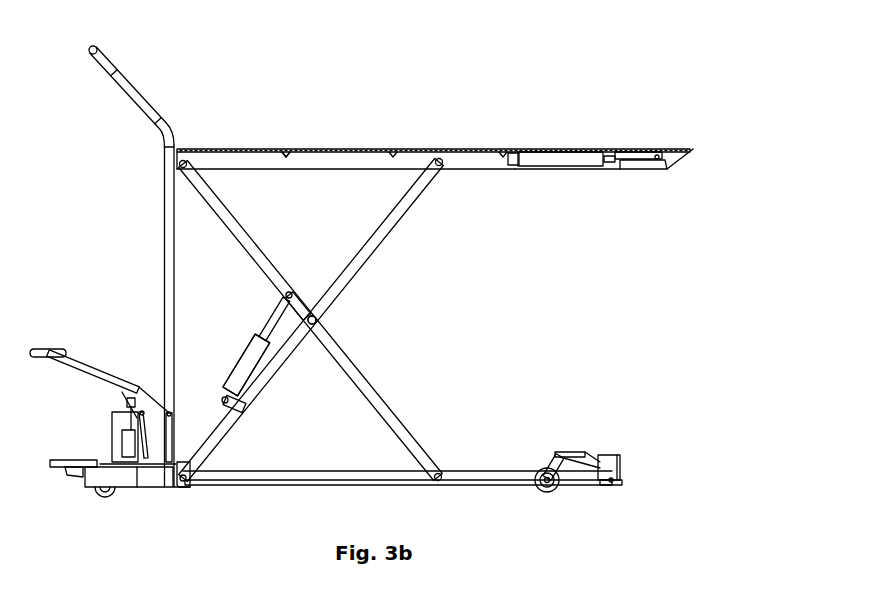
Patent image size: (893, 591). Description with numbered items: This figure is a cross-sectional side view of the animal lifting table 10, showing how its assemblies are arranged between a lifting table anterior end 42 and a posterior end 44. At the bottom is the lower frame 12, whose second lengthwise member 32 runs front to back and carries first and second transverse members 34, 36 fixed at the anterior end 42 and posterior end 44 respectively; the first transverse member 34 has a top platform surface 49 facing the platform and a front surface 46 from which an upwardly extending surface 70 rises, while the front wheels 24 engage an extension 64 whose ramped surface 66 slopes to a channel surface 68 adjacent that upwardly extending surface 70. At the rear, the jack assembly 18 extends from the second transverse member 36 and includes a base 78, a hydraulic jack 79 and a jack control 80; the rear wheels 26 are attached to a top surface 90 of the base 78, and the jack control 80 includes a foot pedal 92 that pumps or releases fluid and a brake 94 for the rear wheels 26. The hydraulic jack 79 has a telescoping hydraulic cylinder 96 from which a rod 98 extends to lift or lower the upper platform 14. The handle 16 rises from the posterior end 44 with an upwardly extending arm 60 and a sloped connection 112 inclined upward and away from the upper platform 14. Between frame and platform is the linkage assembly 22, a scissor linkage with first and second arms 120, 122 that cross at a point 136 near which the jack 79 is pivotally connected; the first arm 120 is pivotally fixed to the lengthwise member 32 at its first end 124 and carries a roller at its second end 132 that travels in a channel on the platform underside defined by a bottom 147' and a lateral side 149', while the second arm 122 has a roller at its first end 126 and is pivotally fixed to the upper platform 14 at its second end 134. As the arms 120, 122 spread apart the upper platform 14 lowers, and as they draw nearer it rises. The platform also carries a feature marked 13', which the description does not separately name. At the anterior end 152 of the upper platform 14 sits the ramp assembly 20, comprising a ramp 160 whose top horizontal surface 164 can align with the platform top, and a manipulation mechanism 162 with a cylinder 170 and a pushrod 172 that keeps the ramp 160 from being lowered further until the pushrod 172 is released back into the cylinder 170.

The animal lifting table 10 is at (730, 297).
The lower frame 12 is at (518, 464).
The platform deck surface 13' is at (435, 132).
The upper platform 14 is at (545, 150).
The handle 16 is at (107, 64).
The jack assembly 18 is at (112, 418).
The ramp assembly 20 is at (688, 151).
The linkage assembly 22 is at (340, 320).
The front wheels 24 is at (607, 455).
The back wheels 26 is at (106, 498).
The second lengthwise member 32 is at (471, 470).
The first transverse member 34 is at (622, 464).
The second transverse member 36 is at (176, 488).
The anterior end 42 is at (722, 157).
The posterior end 44 is at (98, 146).
The front surface 46 is at (622, 482).
The top platform surface 49 is at (173, 446).
The upwardly extending arm 60 is at (164, 235).
The extension 64 is at (581, 452).
The ramped surface 66 is at (602, 464).
The channel surface 68 is at (613, 484).
The upwardly extending surface 70 is at (621, 458).
The base 78 is at (55, 450).
The hydraulic jack 79 is at (240, 360).
The jack control 80 is at (142, 410).
The top surface 90 is at (135, 488).
The foot pedal 92 is at (46, 348).
The brake 94 is at (52, 468).
The telescoping hydraulic cylinder 96 is at (246, 374).
The rod 98 is at (274, 312).
The sloped connection 112 is at (140, 106).
The first arm 120 is at (246, 226).
The second arm 122 is at (392, 215).
The first end of first arm 124 is at (438, 472).
The first end of second arm 126 is at (190, 476).
The second end of first arm 132 is at (190, 159).
The second end of second arm 134 is at (436, 158).
The crossing point 136 is at (312, 314).
The channel bottom 147' is at (394, 133).
The channel lateral side 149' is at (309, 176).
The anterior end of upper platform 152 is at (607, 154).
The ramp 160 is at (660, 153).
The manipulation mechanism 162 is at (571, 160).
The top horizontal surface 164 is at (640, 151).
The cylinder 170 is at (526, 167).
The pushrod 172 is at (643, 169).